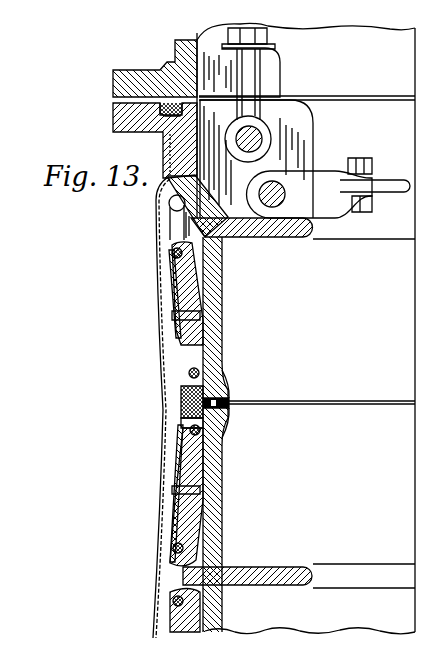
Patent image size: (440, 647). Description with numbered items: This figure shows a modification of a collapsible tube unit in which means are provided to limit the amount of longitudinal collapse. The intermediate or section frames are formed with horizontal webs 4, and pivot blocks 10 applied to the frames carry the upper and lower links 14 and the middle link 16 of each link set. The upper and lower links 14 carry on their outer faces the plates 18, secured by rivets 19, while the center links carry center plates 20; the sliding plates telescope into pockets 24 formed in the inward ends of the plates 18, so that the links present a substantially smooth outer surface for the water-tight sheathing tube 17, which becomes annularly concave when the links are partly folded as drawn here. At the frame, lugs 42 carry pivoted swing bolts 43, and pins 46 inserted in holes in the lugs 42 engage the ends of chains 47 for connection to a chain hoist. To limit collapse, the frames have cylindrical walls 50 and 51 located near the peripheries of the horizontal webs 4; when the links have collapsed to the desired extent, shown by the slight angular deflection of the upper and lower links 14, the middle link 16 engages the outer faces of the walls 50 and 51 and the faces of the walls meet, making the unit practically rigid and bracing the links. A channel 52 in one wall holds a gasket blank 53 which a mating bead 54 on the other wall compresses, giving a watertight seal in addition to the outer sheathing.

The ring or frame 4 is at (278, 238).
The pivot block 10 is at (177, 230).
The upper and lower links 14 is at (180, 300).
The middle link 16 is at (181, 402).
The tube 17 is at (156, 209).
The plates 18 is at (170, 293).
The rivets 19 is at (172, 490).
The center plates 20 is at (181, 412).
The pockets 24 is at (177, 345).
The lugs 42 is at (300, 137).
The swing bolts 43 is at (248, 75).
The pins 46 is at (274, 196).
The chains 47 is at (372, 166).
The cylindrical wall 50 is at (221, 330).
The cylindrical wall 51 is at (222, 490).
The channel 52 is at (226, 421).
The gasket blank 53 is at (230, 402).
The bead 54 is at (226, 401).